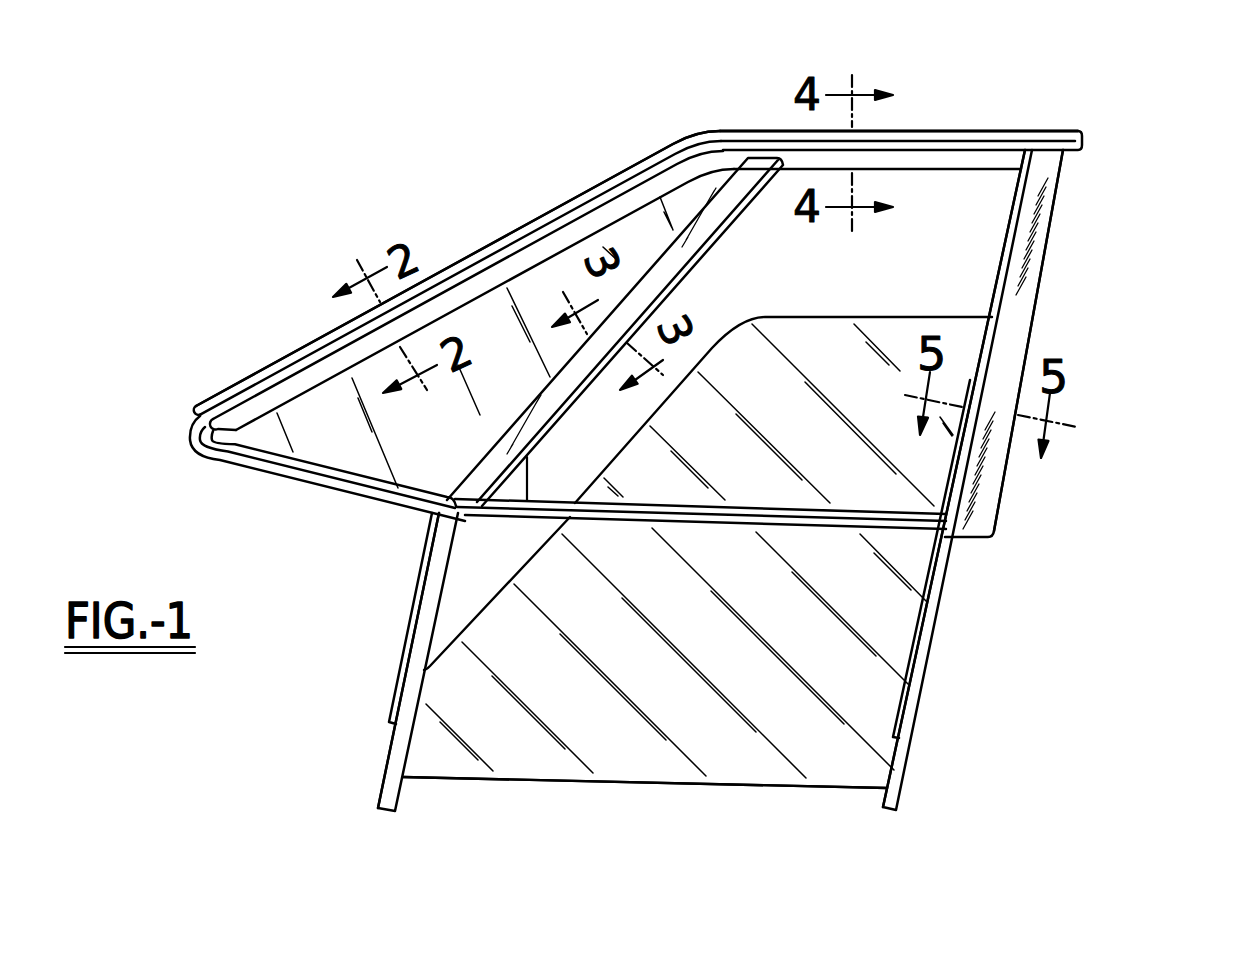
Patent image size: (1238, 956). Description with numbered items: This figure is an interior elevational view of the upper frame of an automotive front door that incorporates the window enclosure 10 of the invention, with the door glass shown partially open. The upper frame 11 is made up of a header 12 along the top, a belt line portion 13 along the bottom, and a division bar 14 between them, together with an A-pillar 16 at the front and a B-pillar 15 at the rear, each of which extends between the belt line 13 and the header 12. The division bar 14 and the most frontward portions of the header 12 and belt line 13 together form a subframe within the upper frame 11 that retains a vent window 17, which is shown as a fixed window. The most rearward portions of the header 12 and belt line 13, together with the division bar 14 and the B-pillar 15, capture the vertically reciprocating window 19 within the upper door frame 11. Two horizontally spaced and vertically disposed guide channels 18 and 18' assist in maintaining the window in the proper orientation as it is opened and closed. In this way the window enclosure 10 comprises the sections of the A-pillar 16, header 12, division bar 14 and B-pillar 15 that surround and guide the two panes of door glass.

The window enclosure 10 is at (957, 173).
The upper frame 11 is at (1053, 238).
The header 12 is at (735, 142).
The belt line portion 13 is at (886, 532).
The division bar 14 is at (693, 243).
The B-pillar 15 is at (1036, 308).
The A-pillar 16 is at (541, 216).
The vent window 17 is at (348, 457).
The guide channel 18 is at (379, 662).
The guide channel 18' is at (957, 480).
The vertically reciprocating window 19 is at (908, 328).